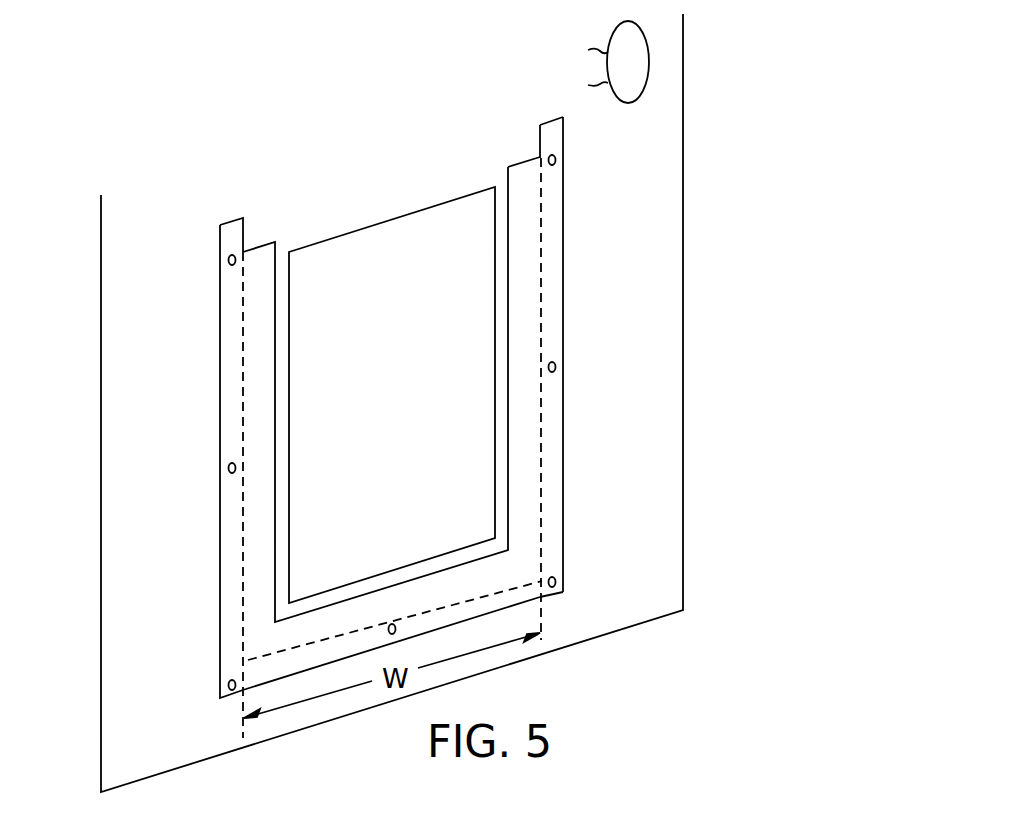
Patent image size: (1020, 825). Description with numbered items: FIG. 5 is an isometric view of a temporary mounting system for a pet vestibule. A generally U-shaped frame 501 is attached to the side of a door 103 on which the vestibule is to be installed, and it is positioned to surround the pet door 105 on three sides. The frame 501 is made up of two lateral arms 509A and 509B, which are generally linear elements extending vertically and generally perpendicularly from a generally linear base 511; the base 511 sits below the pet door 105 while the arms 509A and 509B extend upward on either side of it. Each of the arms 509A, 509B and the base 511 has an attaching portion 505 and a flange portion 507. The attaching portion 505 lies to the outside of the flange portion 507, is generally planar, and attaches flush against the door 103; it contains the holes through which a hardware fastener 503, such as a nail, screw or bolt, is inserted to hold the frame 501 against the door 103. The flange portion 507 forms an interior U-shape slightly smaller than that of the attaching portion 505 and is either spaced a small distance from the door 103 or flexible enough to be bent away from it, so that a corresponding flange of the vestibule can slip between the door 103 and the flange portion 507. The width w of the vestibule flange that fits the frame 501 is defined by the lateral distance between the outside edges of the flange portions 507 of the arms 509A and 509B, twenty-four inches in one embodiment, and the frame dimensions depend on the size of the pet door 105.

The door 103 is at (128, 221).
The pet door 105 is at (350, 392).
The frame 501 is at (558, 468).
The hardware fastener 503 is at (556, 157).
The attaching portion 505 is at (558, 289).
The flange portion 507 is at (525, 218).
The lateral arm 509A is at (558, 399).
The lateral arm 509B is at (238, 553).
The base 511 is at (522, 598).